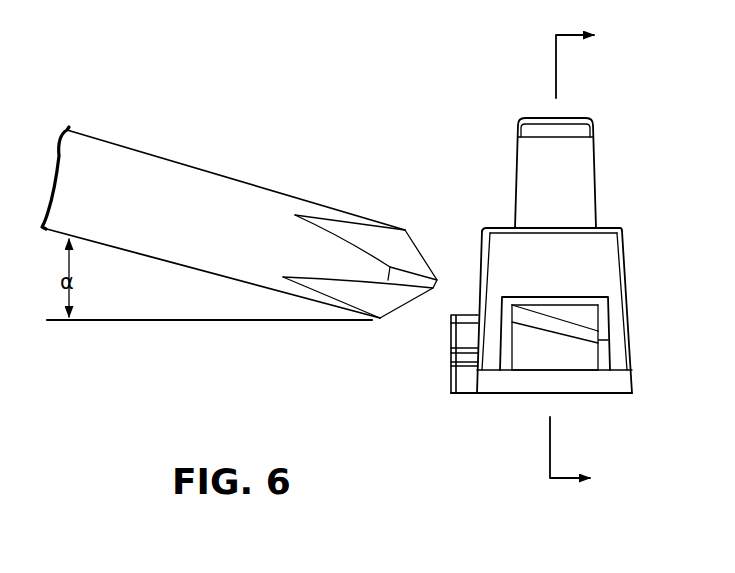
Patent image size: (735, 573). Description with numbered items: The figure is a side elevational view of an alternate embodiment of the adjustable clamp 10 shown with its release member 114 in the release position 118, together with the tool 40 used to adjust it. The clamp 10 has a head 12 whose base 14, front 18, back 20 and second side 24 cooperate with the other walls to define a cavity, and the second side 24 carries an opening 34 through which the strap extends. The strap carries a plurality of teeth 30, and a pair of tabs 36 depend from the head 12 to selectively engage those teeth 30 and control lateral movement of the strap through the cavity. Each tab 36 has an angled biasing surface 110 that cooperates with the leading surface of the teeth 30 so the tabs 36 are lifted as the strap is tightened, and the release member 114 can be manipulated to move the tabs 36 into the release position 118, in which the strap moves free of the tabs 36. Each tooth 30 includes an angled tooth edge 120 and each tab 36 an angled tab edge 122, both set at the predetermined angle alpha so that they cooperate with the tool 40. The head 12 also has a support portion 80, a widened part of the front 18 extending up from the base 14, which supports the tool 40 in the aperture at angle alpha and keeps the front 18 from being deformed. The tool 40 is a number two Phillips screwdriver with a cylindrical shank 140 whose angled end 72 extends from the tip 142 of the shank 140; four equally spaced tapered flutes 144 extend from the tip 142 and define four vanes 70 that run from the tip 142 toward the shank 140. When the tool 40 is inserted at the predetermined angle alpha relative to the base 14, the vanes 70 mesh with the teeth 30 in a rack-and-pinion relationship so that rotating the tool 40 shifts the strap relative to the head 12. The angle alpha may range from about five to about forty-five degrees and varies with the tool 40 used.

The adjustable clamp 10 is at (517, 258).
The head 12 is at (563, 311).
The base 14 is at (530, 395).
The front 18 is at (482, 248).
The back 20 is at (625, 263).
The second side 24 is at (607, 242).
The teeth 30 is at (577, 362).
The opening 34 is at (583, 342).
The tabs 36 is at (537, 312).
The tool 40 is at (239, 234).
The vanes 70 is at (347, 258).
The angled end 72 is at (308, 282).
The support portion 80 is at (453, 377).
The angled biasing surface 110 is at (580, 328).
The release member 114 is at (535, 178).
The release position 118 is at (556, 157).
The angled tooth edge 120 is at (550, 340).
The angled tab edge 122 is at (600, 361).
The shank 140 is at (128, 186).
The tip 142 is at (437, 290).
The tapered flutes 144 is at (388, 300).